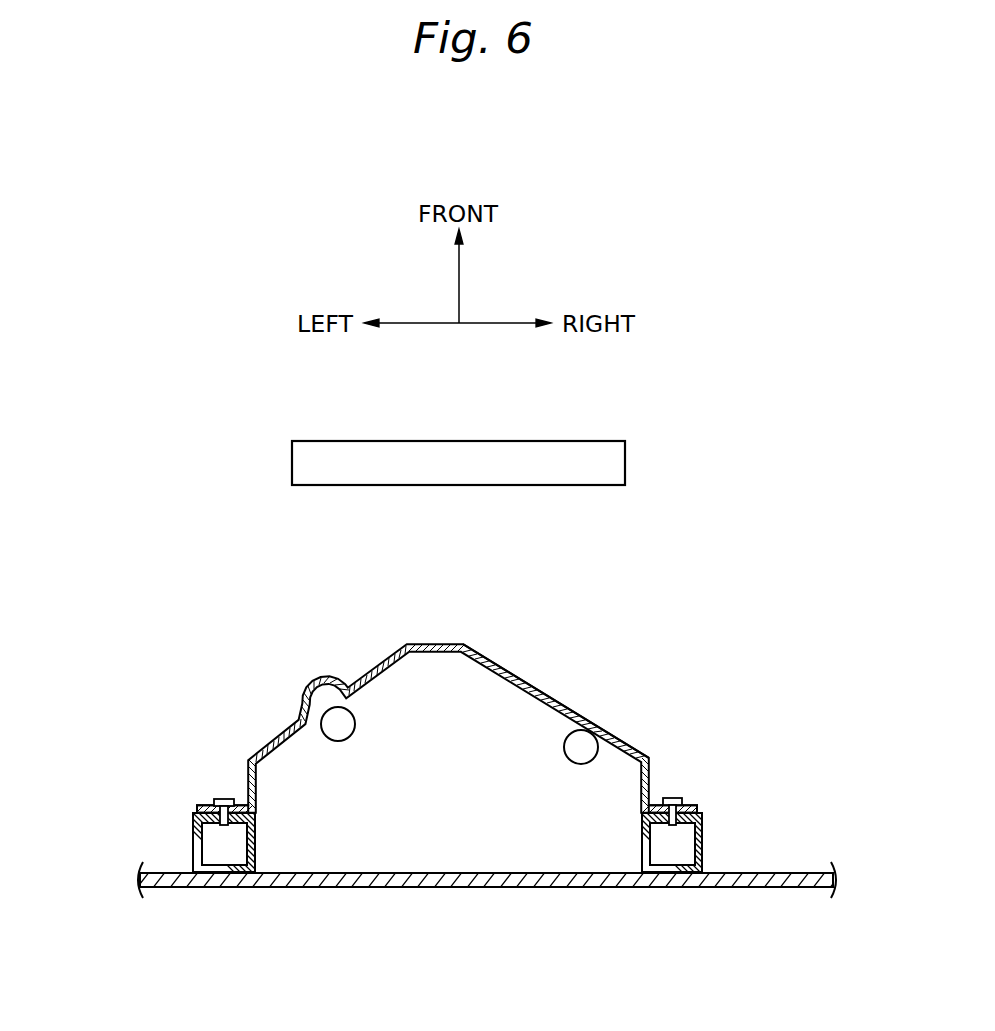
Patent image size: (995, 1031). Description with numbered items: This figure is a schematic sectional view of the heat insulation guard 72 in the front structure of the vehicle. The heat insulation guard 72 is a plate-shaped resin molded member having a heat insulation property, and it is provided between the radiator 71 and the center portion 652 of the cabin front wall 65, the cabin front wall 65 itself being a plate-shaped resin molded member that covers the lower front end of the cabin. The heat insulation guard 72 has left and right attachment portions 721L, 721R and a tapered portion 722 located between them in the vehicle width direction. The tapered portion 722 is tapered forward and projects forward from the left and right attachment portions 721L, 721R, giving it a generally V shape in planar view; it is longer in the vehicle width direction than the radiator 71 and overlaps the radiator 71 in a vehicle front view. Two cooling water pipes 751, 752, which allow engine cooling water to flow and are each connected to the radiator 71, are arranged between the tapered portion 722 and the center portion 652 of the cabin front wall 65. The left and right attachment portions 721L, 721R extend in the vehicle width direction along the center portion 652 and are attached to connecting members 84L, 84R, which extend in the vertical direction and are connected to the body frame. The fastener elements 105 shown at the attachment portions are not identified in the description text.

The radiator 71 is at (625, 466).
The heat insulation guard 72 is at (565, 684).
The tapered portion 722 is at (597, 720).
The left attachment portion 721L is at (205, 806).
The right attachment portion 721R is at (697, 806).
The screw 105 is at (223, 798).
The left connecting member 84L is at (197, 852).
The right connecting member 84R is at (703, 838).
The cabin front wall 65 is at (256, 890).
The center portion 652 is at (443, 888).
The cooling water pipe 751 is at (338, 742).
The cooling water pipe 752 is at (581, 765).